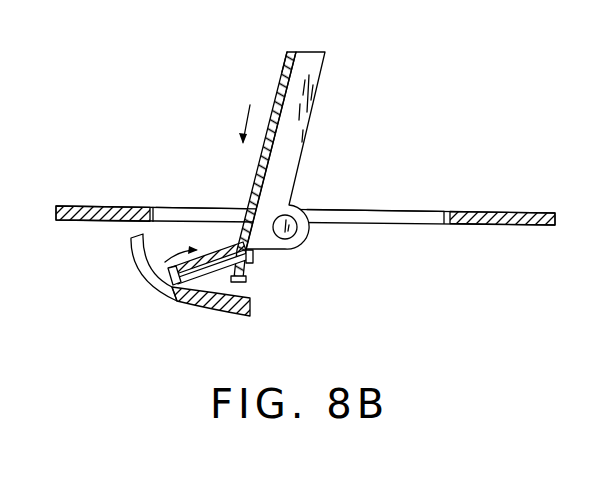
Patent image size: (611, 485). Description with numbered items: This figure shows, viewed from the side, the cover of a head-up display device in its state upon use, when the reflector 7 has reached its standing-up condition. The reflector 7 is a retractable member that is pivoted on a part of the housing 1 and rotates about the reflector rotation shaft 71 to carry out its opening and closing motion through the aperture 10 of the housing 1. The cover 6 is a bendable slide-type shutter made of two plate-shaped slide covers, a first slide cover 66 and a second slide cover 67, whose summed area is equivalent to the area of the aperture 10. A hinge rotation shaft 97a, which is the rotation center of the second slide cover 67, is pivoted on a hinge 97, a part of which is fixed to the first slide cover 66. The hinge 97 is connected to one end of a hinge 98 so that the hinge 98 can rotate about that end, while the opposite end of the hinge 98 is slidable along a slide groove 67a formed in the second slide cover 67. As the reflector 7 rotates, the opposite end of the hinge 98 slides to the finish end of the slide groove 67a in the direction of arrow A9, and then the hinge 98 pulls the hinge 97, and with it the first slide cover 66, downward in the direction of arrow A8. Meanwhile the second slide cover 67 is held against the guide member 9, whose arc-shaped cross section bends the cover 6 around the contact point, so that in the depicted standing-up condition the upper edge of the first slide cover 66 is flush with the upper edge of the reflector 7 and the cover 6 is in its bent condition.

The housing 1 is at (102, 207).
The aperture 10 is at (373, 212).
The cover 6 is at (266, 92).
The first slide cover 66 is at (283, 68).
The reflector 7 is at (328, 60).
The reflector rotation shaft 71 is at (296, 235).
The guide member 9 is at (140, 257).
The hinge 98 is at (226, 308).
The hinge 97 is at (250, 265).
The hinge rotation shaft 97a is at (257, 253).
The second slide cover 67 is at (212, 248).
The slide groove 67a is at (183, 300).
The arrow A8 is at (246, 121).
The arrow A9 is at (135, 246).